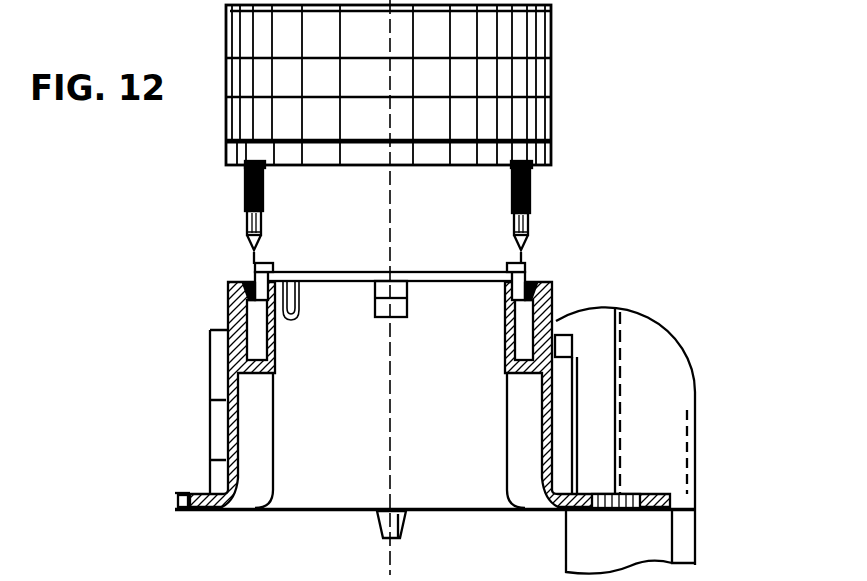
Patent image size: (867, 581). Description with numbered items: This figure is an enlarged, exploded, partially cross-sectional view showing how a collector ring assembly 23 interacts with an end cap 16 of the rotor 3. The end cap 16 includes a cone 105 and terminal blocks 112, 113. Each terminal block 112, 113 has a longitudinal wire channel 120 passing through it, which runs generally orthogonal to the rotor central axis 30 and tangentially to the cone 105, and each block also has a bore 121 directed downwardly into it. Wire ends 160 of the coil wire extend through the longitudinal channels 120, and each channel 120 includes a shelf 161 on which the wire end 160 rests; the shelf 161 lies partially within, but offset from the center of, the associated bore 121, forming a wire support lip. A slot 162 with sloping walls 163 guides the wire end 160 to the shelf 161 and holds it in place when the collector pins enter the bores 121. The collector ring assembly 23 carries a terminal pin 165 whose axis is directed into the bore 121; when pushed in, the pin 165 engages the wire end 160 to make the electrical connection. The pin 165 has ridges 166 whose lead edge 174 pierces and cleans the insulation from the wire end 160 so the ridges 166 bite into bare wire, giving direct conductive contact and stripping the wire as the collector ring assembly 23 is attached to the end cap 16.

The collector ring assembly 23 is at (560, 59).
The ridges 166 is at (245, 171).
The terminal pin 165 is at (245, 196).
The lead edge 174 is at (262, 212).
The wire end 160 is at (252, 283).
The longitudinal wire channel 120 is at (236, 302).
The shelf 161 is at (255, 306).
The bore 121 is at (266, 262).
The sloping walls 163 is at (240, 290).
The slot 162 is at (545, 283).
The terminal block 113 is at (226, 322).
The cone 105 is at (275, 448).
The terminal block 112 is at (584, 306).
The rotor 3 is at (697, 378).
The end cap 16 is at (697, 471).
The rotor central axis 30 is at (398, 570).